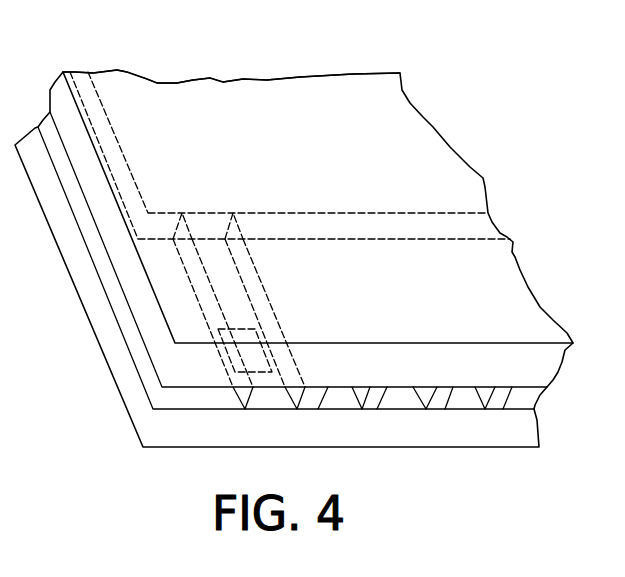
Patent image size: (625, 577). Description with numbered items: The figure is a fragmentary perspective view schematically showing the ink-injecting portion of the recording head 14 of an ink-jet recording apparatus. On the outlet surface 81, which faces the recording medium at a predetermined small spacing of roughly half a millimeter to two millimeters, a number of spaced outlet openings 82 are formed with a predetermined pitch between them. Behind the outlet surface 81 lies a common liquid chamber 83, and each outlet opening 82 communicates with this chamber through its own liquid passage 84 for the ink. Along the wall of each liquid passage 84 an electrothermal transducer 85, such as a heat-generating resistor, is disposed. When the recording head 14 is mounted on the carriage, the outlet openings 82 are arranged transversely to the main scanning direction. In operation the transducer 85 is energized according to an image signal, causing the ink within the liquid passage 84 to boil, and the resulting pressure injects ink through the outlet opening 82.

The recording head 14 is at (268, 62).
The outlet surface 81 is at (340, 400).
The outlet openings 82 is at (442, 400).
The common liquid chamber 83 is at (190, 100).
The liquid passage 84 is at (225, 288).
The transducer 85 is at (245, 338).